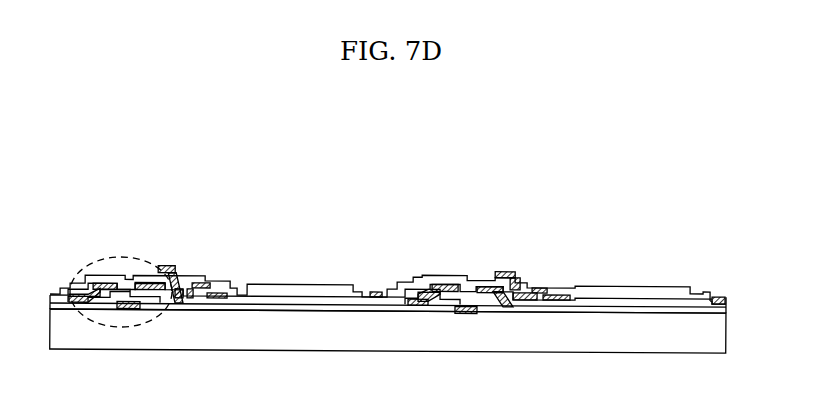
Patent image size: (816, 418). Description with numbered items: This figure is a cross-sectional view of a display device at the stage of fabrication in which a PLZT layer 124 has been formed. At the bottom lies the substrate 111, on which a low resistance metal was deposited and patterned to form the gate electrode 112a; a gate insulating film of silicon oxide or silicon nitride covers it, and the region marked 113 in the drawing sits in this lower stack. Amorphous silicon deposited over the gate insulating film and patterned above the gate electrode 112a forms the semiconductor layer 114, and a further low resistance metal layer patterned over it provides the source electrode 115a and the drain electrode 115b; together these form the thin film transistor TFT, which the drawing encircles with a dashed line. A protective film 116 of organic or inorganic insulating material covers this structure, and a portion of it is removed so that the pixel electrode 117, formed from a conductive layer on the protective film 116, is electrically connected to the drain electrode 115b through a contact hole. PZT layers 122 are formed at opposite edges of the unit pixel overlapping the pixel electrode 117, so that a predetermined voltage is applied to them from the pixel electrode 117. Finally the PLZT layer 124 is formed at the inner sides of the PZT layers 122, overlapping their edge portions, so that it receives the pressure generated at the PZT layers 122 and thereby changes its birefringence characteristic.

The substrate 111 is at (727, 334).
The gate electrode 112a is at (128, 310).
The buffer layer 113 is at (727, 310).
The semiconductor layer 114 is at (160, 313).
The source electrode 115a is at (75, 290).
The drain electrode 115b is at (180, 268).
The protective film 116 is at (727, 296).
The pixel electrode 117 is at (383, 288).
The PZT layer 122 is at (556, 287).
The PLZT layer 124 is at (297, 283).
The thin film transistor TFT is at (137, 256).